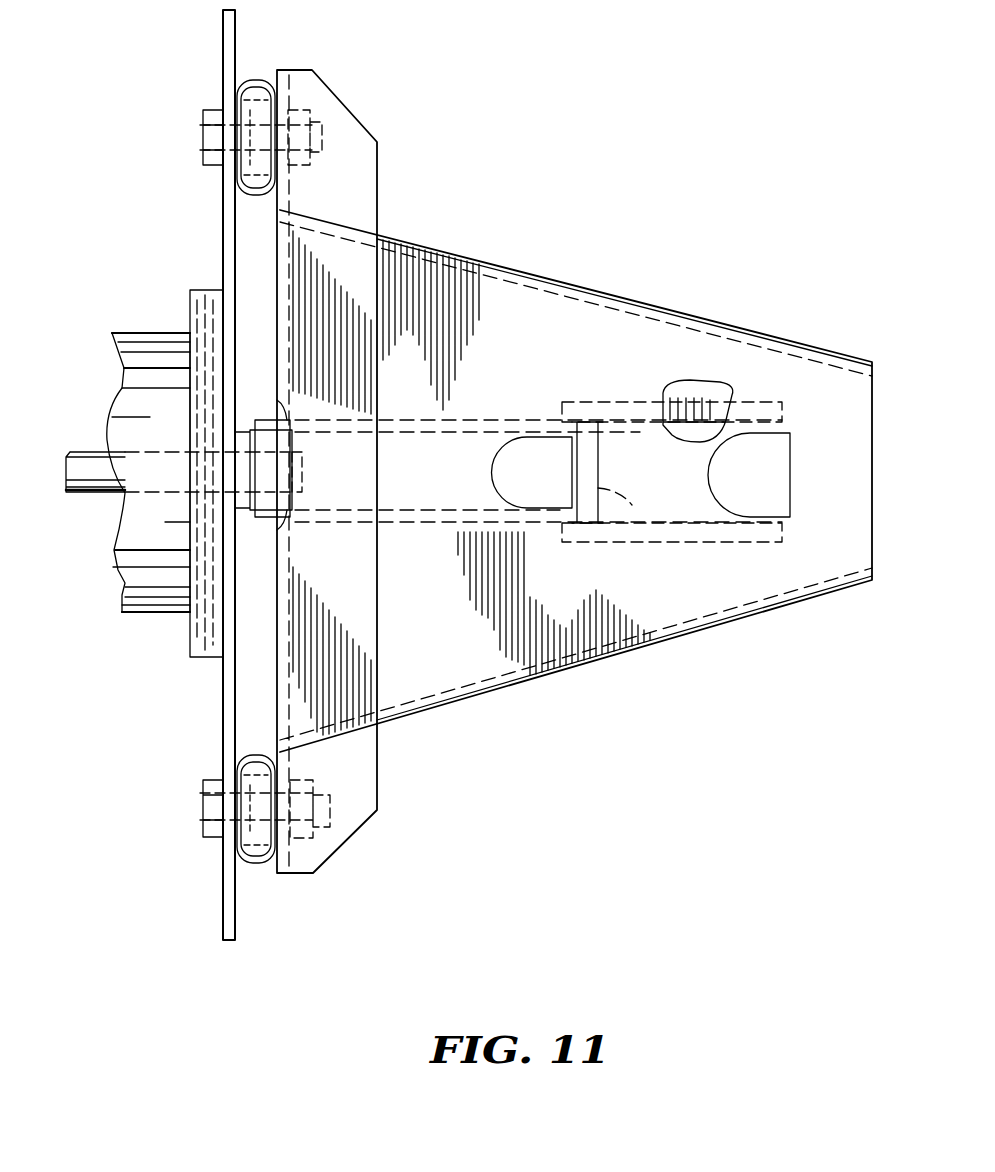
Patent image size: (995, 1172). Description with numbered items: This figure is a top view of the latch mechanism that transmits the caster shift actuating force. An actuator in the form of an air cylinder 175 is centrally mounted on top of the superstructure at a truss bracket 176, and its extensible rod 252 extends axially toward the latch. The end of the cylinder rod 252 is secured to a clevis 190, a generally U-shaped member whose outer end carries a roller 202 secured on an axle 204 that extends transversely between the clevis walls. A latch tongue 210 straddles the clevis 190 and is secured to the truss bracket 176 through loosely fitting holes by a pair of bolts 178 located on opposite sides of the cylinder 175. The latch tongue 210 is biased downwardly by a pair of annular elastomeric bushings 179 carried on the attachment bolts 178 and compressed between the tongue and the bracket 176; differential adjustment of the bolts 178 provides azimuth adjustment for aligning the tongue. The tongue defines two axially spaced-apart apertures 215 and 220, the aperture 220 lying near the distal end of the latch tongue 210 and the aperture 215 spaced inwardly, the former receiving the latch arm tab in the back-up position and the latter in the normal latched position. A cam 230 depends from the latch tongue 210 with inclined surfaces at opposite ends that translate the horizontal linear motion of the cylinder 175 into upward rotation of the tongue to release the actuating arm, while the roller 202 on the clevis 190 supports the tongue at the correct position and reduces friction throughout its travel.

The air cylinder 175 is at (130, 330).
The truss bracket 176 is at (222, 895).
The bolts 178 is at (212, 110).
The annular elastomeric bushings 179 is at (240, 82).
The clevis 190 is at (475, 420).
The roller 202 is at (562, 530).
The axle 204 is at (628, 532).
The latch tongue 210 is at (733, 628).
The aperture 215 is at (525, 457).
The aperture 220 is at (775, 462).
The cam 230 is at (705, 395).
The extensible rod 252 is at (95, 452).